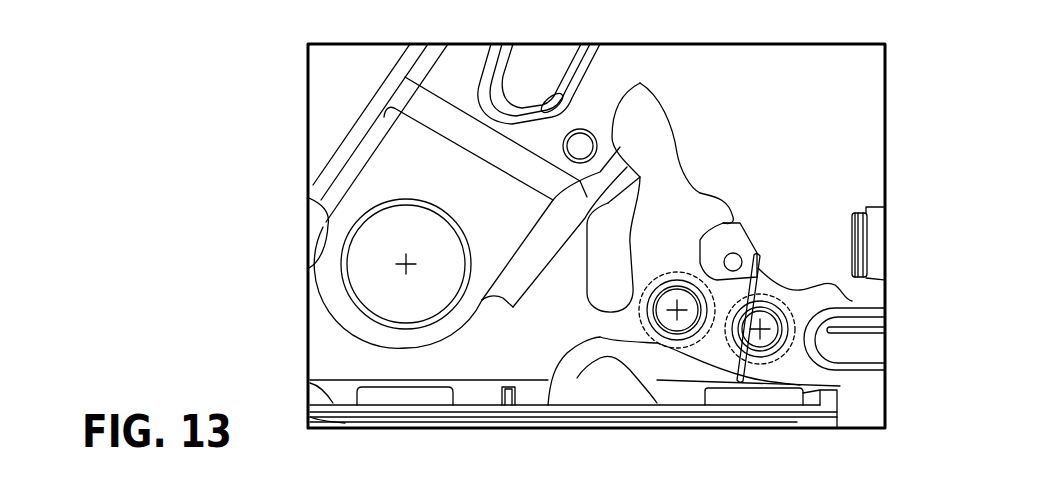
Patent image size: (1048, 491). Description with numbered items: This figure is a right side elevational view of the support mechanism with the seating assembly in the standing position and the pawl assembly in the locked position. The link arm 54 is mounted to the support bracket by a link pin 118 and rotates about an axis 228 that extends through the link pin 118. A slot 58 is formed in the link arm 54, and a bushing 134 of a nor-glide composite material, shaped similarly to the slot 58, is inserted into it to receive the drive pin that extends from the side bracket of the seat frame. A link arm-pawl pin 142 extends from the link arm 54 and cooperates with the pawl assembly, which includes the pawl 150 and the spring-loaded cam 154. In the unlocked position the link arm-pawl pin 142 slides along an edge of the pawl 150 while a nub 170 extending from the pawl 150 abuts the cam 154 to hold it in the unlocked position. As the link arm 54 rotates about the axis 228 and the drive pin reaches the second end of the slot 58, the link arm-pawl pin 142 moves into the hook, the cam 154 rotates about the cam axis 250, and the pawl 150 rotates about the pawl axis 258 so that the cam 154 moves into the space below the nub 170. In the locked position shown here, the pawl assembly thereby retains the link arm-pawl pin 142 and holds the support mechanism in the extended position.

The link arm 54 is at (421, 176).
The slot 58 is at (552, 64).
The link pin 118 is at (385, 302).
The bushing 134 is at (572, 96).
The link arm-pawl pin 142 is at (580, 146).
The pawl 150 is at (663, 187).
The cam 154 is at (733, 240).
The nub 170 is at (722, 208).
The axis 228 is at (406, 266).
The cam axis 250 is at (763, 330).
The pawl axis 258 is at (743, 377).